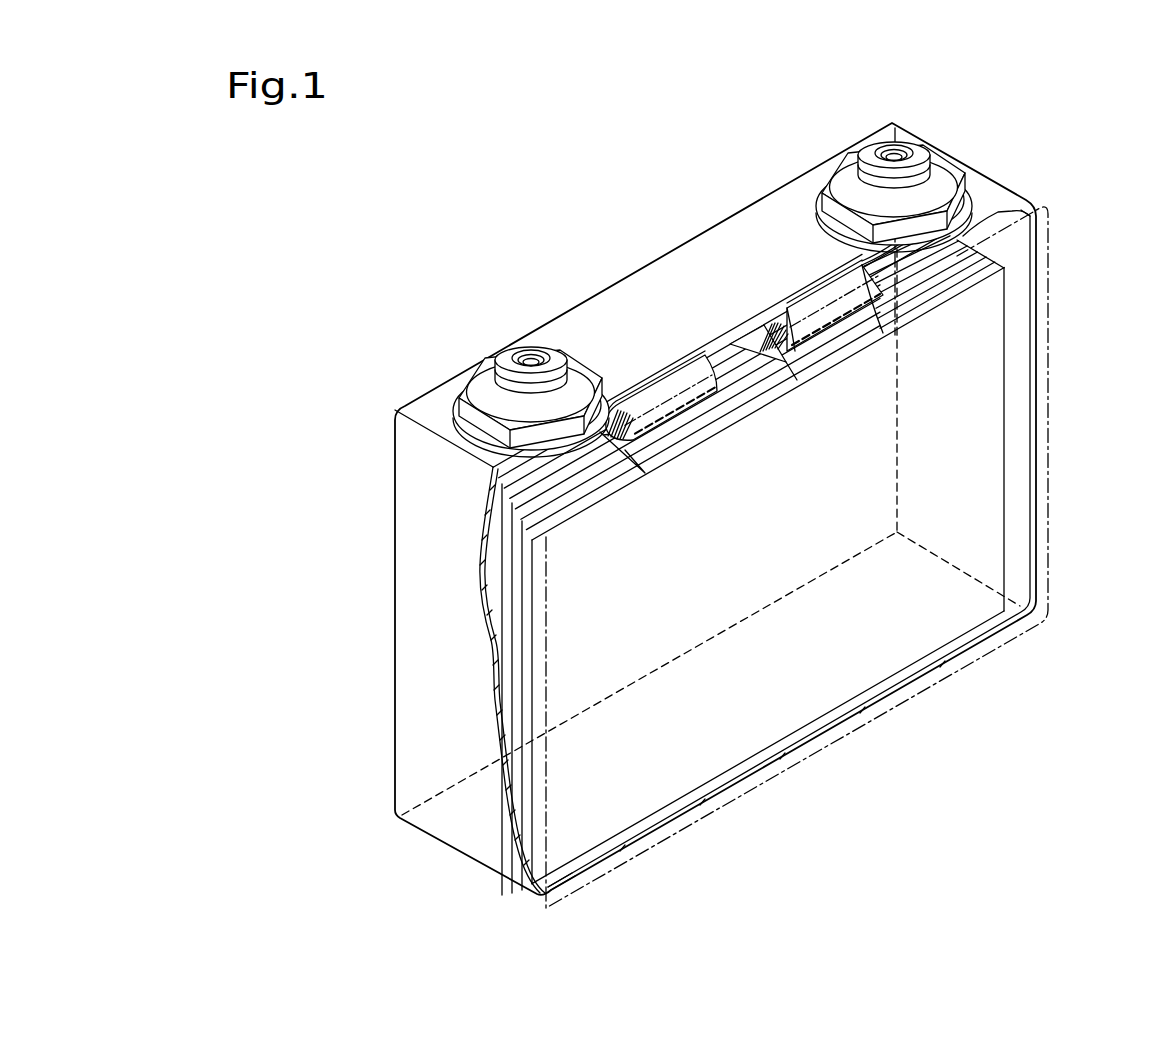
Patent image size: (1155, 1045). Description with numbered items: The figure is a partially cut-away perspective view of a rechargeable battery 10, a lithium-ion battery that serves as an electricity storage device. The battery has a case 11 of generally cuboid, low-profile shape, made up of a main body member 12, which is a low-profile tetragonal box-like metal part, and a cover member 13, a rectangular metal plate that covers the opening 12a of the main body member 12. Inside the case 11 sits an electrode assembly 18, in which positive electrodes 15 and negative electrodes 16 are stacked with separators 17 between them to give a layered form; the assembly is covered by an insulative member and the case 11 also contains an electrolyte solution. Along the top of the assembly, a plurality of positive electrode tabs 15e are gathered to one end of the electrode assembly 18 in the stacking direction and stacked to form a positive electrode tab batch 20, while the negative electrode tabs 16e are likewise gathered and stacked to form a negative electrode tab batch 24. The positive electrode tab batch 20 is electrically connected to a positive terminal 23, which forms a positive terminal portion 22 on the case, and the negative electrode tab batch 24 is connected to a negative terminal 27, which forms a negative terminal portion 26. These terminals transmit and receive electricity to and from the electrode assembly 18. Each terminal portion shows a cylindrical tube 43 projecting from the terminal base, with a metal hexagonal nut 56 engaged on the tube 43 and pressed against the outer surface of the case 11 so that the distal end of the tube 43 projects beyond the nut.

The rechargeable battery 10 is at (1037, 102).
The case 11 is at (466, 927).
The main body member 12 is at (460, 838).
The opening 12a is at (542, 860).
The cover member 13 is at (537, 908).
The positive electrodes 15 is at (565, 515).
The positive electrode tabs 15e is at (714, 422).
The negative electrodes 16 is at (582, 480).
The negative electrode tabs 16e is at (850, 350).
The separators 17 is at (570, 500).
The electrode assembly 18 is at (1003, 517).
The positive electrode tab batch 20 is at (687, 375).
The positive terminal portion 22 is at (462, 460).
The positive terminal 23 is at (538, 348).
The negative electrode tab batch 24 is at (818, 300).
The negative terminal portion 26 is at (822, 212).
The negative terminal 27 is at (890, 132).
The tube 43 is at (490, 366).
The hexagonal nut 56 is at (462, 402).